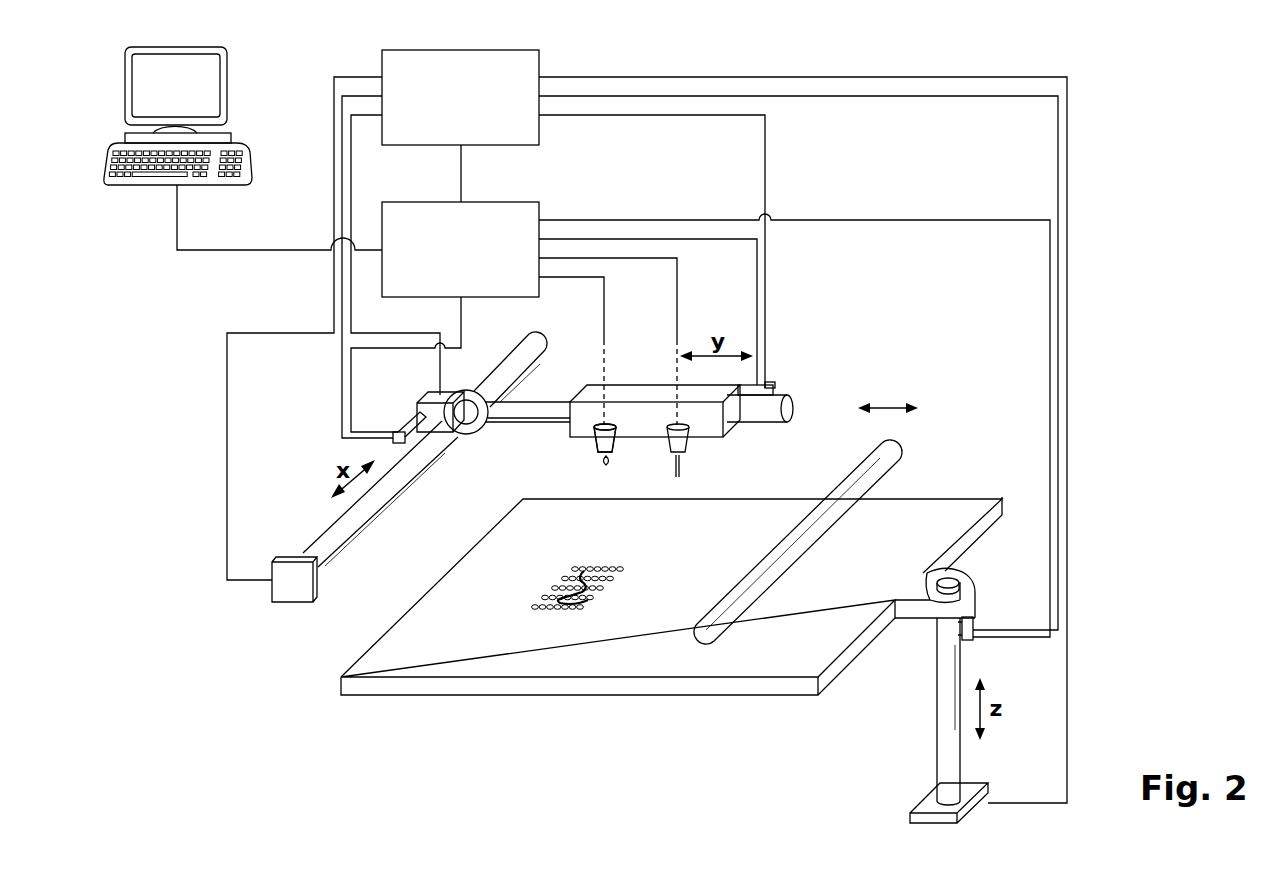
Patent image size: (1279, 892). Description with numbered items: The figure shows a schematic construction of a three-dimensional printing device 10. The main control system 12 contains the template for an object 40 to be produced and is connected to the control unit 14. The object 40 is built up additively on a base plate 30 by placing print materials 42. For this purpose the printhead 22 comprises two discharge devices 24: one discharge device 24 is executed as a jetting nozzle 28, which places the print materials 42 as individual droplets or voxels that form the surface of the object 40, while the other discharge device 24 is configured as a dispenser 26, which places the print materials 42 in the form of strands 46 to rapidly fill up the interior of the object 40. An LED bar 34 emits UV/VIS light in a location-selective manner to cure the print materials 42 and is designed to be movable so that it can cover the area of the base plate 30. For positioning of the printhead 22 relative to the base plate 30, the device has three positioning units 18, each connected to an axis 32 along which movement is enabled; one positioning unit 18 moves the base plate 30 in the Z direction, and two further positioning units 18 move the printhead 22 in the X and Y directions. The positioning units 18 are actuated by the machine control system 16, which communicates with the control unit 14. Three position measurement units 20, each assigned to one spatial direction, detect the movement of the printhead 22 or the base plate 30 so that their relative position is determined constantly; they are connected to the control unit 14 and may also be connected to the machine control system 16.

The 3D printing device 10 is at (1134, 158).
The main control system 12 is at (190, 102).
The control unit 14 is at (448, 262).
The machine control system 16 is at (448, 110).
The positioning unit 18 is at (452, 393).
The position measurement unit 20 is at (403, 428).
The printhead 22 is at (636, 392).
The discharge device 24 is at (605, 438).
The dispenser 26 is at (688, 448).
The jetting nozzle 28 is at (597, 448).
The base plate 30 is at (395, 688).
The axis 32 is at (545, 402).
The LED bar 34 is at (897, 449).
The object 40 is at (603, 612).
The print material 42 is at (680, 470).
The strand 46 is at (583, 568).